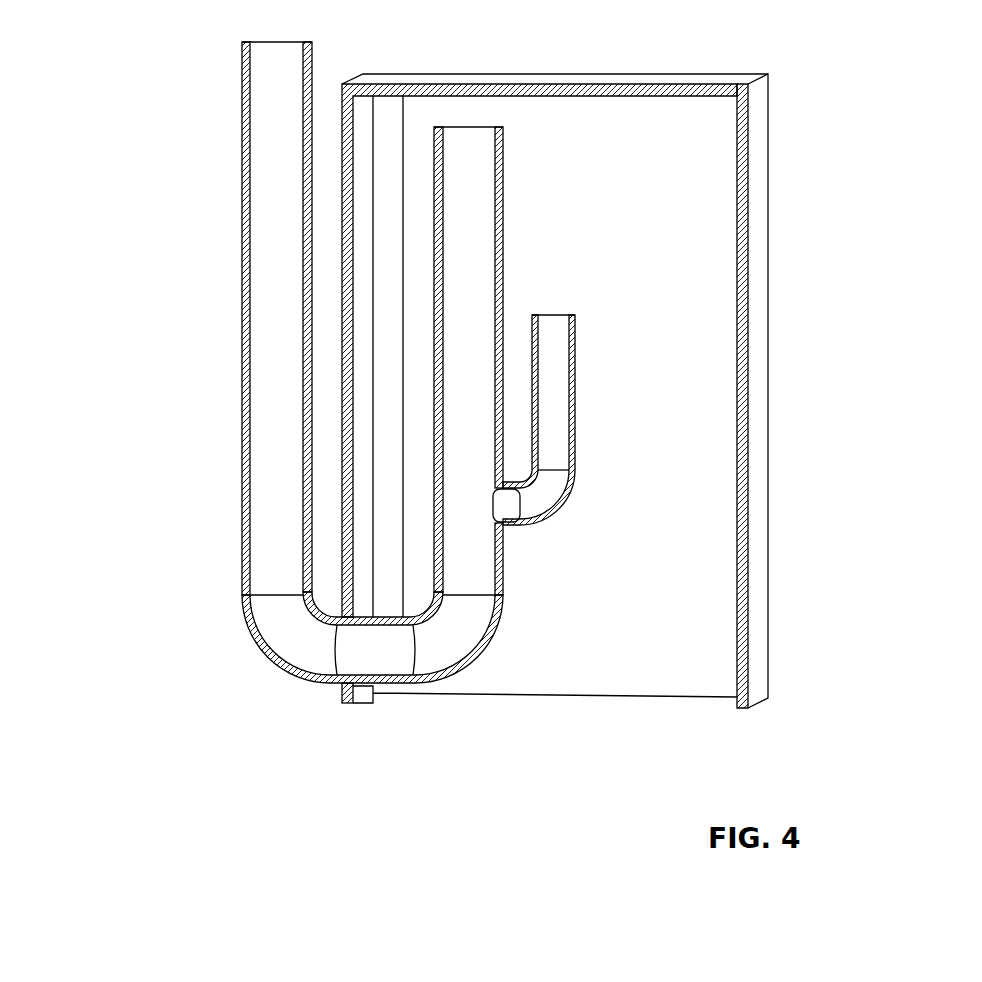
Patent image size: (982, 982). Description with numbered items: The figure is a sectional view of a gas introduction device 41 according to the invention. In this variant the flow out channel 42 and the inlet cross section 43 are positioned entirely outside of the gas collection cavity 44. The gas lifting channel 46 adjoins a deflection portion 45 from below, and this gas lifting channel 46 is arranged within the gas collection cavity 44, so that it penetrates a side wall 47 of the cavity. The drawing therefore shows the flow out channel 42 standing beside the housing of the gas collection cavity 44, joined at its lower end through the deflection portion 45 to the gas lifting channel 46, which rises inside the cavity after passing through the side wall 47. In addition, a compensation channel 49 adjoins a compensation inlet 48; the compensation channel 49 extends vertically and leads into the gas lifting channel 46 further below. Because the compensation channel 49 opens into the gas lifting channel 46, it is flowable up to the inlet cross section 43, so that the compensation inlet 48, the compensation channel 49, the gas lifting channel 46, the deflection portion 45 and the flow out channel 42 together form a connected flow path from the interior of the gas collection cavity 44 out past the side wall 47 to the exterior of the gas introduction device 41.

The gas introduction device 41 is at (163, 133).
The flow out channel 42 is at (275, 330).
The inlet cross section 43 is at (280, 614).
The gas collection cavity 44 is at (693, 488).
The deflection portion 45 is at (300, 645).
The gas lifting channel 46 is at (478, 552).
The side wall 47 is at (346, 684).
The compensation inlet 48 is at (552, 312).
The compensation channel 49 is at (550, 395).